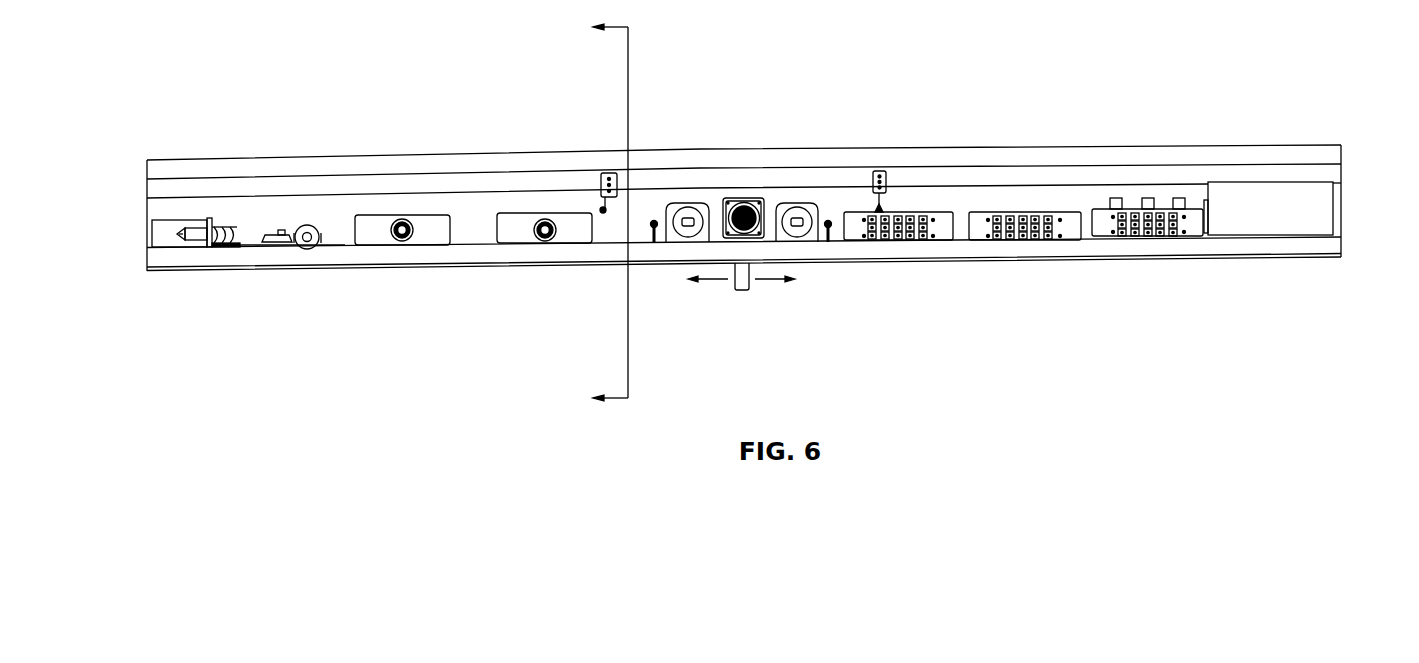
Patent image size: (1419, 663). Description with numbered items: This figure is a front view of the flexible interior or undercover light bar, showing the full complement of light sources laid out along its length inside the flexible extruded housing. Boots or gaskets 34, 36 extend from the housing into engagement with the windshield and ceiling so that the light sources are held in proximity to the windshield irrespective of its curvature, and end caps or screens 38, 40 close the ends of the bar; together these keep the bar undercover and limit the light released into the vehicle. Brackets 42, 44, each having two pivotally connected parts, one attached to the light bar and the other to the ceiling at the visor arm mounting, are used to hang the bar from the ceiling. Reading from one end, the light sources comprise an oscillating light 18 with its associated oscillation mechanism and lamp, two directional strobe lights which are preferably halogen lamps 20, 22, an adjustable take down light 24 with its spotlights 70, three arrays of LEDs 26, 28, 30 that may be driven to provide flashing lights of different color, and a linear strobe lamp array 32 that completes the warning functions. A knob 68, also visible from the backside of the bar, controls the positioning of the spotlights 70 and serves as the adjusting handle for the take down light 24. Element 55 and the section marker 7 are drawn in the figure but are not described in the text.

The section line 7- 7 is at (600, 213).
The oscillating light 18 is at (210, 248).
The halogen lamp 20 is at (378, 245).
The halogen lamp 22 is at (520, 243).
The adjustable take down light 24 is at (795, 246).
The array of LEDs 26 is at (903, 240).
The array of LEDs 28 is at (1030, 240).
The array of LEDs 30 is at (1160, 236).
The linear strobe lamp array 32 is at (1269, 218).
The boot or gasket 34 is at (287, 248).
The boot or gasket 36 is at (405, 152).
The end cap or screen 38 is at (1341, 183).
The end cap or screen 40 is at (147, 199).
The bracket 42 is at (603, 203).
The bracket 44 is at (885, 198).
The sensor 55 is at (744, 198).
The knob 68 is at (748, 292).
The spotlights 70 is at (688, 218).